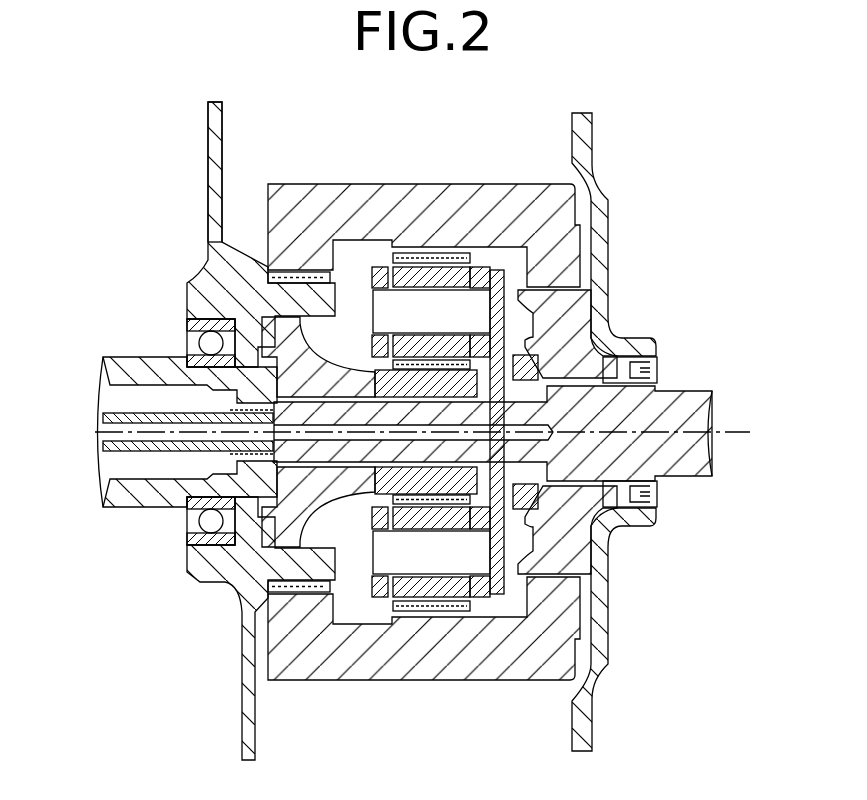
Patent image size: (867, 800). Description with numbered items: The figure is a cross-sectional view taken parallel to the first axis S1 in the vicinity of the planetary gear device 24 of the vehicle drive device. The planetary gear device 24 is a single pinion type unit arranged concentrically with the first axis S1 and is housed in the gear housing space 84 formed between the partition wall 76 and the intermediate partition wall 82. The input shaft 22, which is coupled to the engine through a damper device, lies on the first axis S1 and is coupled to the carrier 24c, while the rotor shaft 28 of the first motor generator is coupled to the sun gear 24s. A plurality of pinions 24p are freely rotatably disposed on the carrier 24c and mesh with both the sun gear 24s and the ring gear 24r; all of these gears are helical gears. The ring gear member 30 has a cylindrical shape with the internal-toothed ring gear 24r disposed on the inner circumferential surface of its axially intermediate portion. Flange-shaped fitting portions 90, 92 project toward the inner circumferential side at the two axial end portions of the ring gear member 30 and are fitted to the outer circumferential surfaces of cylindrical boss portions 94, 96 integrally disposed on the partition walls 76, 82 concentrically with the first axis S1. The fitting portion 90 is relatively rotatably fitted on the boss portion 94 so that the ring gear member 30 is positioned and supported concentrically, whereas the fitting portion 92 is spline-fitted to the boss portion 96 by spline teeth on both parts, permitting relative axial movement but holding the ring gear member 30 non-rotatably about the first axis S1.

The input shaft 22 is at (690, 408).
The planetary gear device 24 is at (348, 160).
The pinions 24p is at (418, 270).
The sun gear 24s is at (423, 500).
The ring gear 24r is at (421, 611).
The carrier 24c is at (480, 594).
The rotor shaft 28 is at (133, 365).
The ring gear member 30 is at (490, 205).
The partition wall 76 is at (588, 152).
The intermediate partition wall 82 is at (216, 152).
The gear housing space 84 is at (242, 164).
The fitting portion 90 is at (555, 268).
The fitting portion 92 is at (282, 255).
The boss portion 94 is at (572, 552).
The boss portion 96 is at (297, 565).
The first axis S1 is at (95, 432).